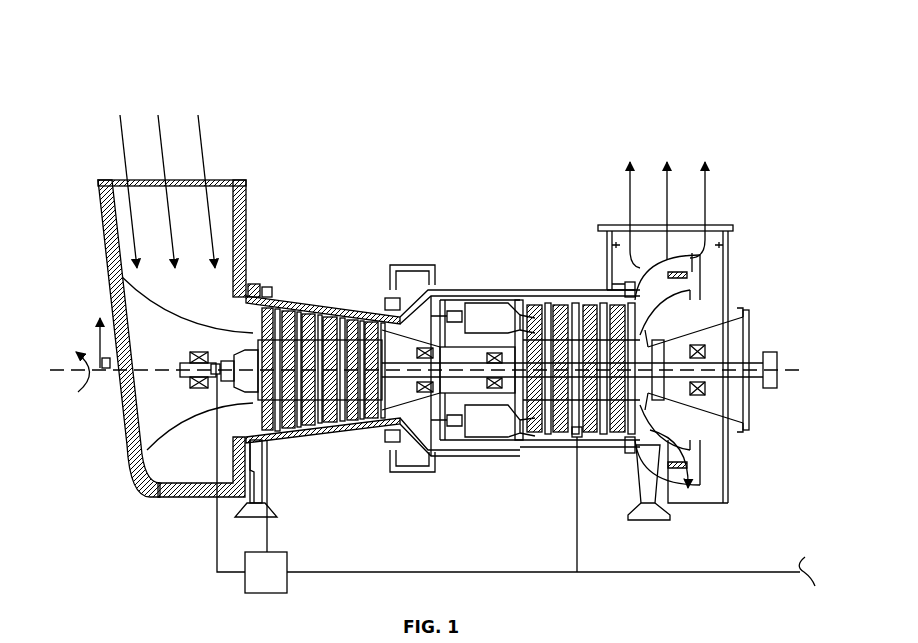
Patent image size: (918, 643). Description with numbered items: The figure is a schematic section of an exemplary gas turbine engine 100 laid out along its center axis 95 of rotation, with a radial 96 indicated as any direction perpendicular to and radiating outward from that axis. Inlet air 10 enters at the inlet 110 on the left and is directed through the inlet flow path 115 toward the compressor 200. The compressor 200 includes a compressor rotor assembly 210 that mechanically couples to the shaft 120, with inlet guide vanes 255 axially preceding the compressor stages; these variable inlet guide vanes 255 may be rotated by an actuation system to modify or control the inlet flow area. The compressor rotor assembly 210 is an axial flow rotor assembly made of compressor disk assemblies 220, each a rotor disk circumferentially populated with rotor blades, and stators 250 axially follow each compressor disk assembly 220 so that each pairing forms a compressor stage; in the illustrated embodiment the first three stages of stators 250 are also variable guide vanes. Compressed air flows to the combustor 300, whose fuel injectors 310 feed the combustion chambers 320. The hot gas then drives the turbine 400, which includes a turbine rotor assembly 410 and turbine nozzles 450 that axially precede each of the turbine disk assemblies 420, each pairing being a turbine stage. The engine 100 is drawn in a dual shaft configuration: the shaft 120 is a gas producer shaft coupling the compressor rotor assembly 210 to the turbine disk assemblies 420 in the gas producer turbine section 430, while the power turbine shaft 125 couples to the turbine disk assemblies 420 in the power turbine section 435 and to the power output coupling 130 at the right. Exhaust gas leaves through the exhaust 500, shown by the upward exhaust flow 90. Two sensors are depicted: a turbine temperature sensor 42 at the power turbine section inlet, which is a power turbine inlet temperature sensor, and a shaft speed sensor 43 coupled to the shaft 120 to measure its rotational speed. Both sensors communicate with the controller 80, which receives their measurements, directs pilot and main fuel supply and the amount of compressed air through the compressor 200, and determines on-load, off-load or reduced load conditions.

The gas turbine engine 100 is at (118, 22).
The inlet 110 is at (237, 104).
The compressor 200 is at (410, 104).
The combustor 300 is at (508, 104).
The turbine 400 is at (625, 104).
The exhaust 500 is at (755, 126).
The inlet air flow 10 is at (122, 153).
The exhaust gas flow 90 is at (622, 190).
The radial 96 is at (97, 332).
The center axis 95 is at (75, 373).
The shaft 120 is at (192, 352).
The shaft speed sensor 43 is at (215, 363).
The inlet flow path 115 is at (232, 300).
The inlet guide vanes 255 is at (265, 290).
The compressor stationary vanes (stators) 250 is at (265, 302).
The compressor disk assemblies 220 is at (305, 433).
The compressor rotor assembly 210 is at (318, 450).
The fuel injectors 310 is at (455, 290).
The combustion chambers 320 is at (488, 300).
The turbine nozzles 450 is at (584, 302).
The turbine disk assemblies 420 is at (610, 440).
The gas producer turbine section 430 is at (570, 216).
The power turbine section 435 is at (625, 216).
The turbine temperature sensor 42 is at (568, 440).
The turbine rotor assembly 410 is at (560, 465).
The power turbine shaft 125 is at (747, 358).
The power output coupling 130 is at (770, 352).
The controller 80 is at (530, 572).